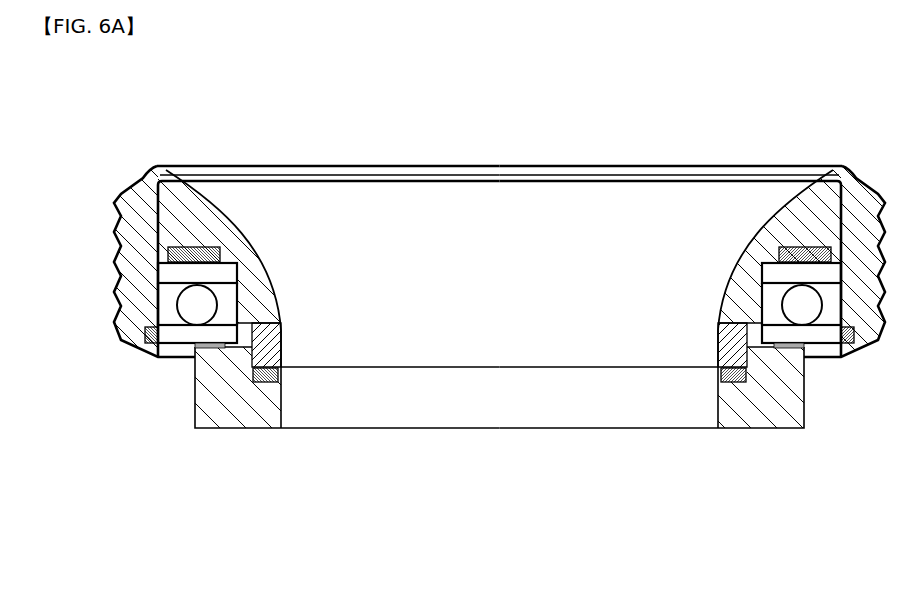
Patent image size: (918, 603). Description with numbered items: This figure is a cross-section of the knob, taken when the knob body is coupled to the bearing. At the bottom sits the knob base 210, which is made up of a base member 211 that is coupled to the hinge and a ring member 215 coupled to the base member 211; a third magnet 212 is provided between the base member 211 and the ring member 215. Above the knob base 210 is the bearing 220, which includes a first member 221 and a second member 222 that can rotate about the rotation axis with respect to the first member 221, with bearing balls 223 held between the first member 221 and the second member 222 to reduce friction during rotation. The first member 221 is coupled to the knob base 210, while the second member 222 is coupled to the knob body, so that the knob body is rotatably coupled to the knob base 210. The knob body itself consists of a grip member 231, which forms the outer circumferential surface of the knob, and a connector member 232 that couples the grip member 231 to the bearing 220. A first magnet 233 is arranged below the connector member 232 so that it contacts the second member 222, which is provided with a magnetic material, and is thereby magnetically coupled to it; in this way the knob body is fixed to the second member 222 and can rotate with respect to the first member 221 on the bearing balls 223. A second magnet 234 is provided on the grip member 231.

The knob base 210 is at (327, 507).
The base member 211 is at (222, 415).
The third magnet 212 is at (283, 368).
The ring member 215 is at (265, 384).
The bearing 220 is at (362, 275).
The first member 221 is at (233, 335).
The second member 222 is at (233, 273).
The bearing balls 223 is at (210, 306).
The grip member 231 is at (138, 187).
The connector member 232 is at (207, 210).
The first magnet 233 is at (221, 252).
The second magnet 234 is at (148, 334).